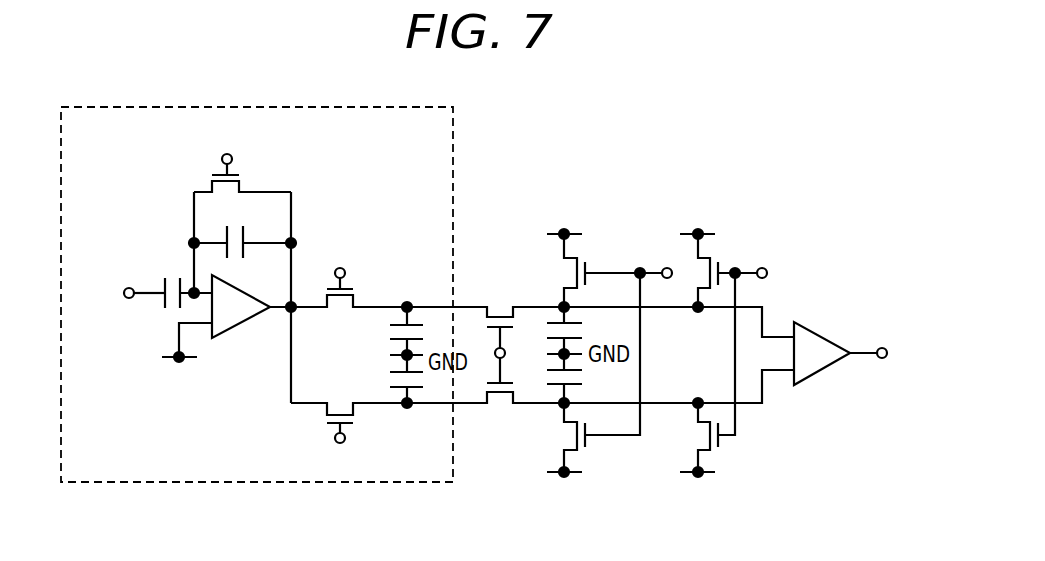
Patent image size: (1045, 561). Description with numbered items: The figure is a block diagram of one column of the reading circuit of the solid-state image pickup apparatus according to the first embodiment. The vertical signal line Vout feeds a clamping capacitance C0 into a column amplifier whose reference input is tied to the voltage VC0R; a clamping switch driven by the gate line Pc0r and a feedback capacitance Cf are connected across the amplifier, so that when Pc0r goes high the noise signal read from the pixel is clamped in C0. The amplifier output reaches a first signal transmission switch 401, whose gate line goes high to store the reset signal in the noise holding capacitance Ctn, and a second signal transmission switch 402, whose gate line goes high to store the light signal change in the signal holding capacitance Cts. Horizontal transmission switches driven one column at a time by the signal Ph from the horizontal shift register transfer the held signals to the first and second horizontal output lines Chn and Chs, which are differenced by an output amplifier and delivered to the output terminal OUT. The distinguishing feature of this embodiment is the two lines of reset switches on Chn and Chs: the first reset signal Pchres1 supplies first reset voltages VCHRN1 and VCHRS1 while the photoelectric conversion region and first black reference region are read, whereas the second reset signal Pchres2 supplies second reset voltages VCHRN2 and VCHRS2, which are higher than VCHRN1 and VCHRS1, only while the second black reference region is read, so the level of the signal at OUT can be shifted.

The first signal transmission switch 401 is at (357, 290).
The second signal transmission switch 402 is at (357, 420).
The gate line of clamping switch Pc0r is at (242, 158).
The feedback capacitance Cf is at (242, 228).
The clamping capacitance C0 is at (183, 276).
The vertical signal line Vout is at (118, 293).
The clamp reference voltage VC0R is at (182, 360).
The noise holding capacitance Ctn is at (385, 331).
The signal holding capacitance Cts is at (385, 379).
The horizontal transmission switch signal Ph is at (485, 355).
The first horizontal output line Chn is at (587, 330).
The second horizontal output line Chs is at (586, 378).
The first reset voltage for Chn VCHRN1 is at (562, 253).
The second reset voltage for Chn VCHRN2 is at (697, 253).
The first reset voltage for Chs VCHRS1 is at (567, 455).
The second reset voltage for Chs VCHRS2 is at (702, 455).
The first reset signal Pchres1 is at (632, 337).
The second reset signal Pchres2 is at (761, 337).
The output terminal OUT is at (868, 353).